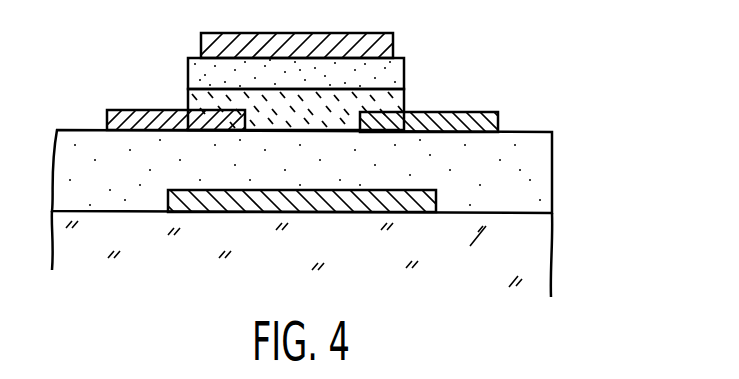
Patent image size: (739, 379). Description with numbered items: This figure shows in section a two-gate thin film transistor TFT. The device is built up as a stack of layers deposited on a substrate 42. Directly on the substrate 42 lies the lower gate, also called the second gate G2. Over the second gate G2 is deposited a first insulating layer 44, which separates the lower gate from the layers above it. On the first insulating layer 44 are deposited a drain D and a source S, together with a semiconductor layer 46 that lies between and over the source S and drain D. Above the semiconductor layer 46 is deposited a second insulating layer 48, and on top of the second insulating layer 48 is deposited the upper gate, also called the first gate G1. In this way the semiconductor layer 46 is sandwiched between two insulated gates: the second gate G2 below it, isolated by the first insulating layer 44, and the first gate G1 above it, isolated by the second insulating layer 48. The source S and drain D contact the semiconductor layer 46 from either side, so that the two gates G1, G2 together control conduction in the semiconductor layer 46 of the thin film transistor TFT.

The thin film transistor TFT is at (133, 43).
The first gate G1 is at (393, 48).
The second gate G2 is at (193, 198).
The source S is at (107, 118).
The drain D is at (498, 122).
The substrate 42 is at (537, 243).
The first insulating layer 44 is at (541, 163).
The semiconductor layer 46 is at (404, 108).
The second insulating layer 48 is at (188, 70).